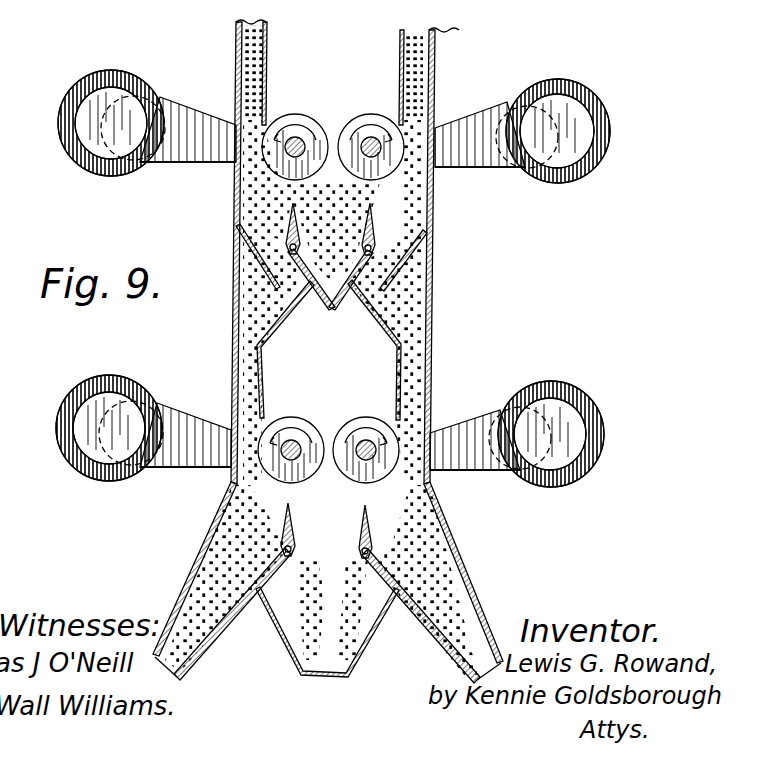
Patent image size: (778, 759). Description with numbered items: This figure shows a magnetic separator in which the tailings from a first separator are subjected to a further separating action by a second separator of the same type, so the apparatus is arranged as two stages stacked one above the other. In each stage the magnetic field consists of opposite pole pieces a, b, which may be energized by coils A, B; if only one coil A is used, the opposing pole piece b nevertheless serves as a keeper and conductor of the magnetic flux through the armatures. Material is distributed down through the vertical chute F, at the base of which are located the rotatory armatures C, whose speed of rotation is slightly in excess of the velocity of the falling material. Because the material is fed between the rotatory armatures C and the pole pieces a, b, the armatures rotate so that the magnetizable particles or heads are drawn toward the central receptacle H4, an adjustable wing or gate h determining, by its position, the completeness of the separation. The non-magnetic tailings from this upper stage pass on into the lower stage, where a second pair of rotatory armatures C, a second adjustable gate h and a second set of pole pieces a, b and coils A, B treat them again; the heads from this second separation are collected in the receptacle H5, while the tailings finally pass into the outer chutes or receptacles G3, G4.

The coil A is at (128, 275).
The coil B is at (536, 283).
The pole piece a is at (188, 282).
The pole piece b is at (477, 286).
The vertical chute F is at (268, 43).
The rotatory armature C is at (358, 116).
The adjustable wing or gate h is at (368, 215).
The receptacle H4 is at (330, 265).
The receptacle H5 is at (327, 632).
The chute or receptacle G3 is at (222, 581).
The chute or receptacle G4 is at (432, 582).